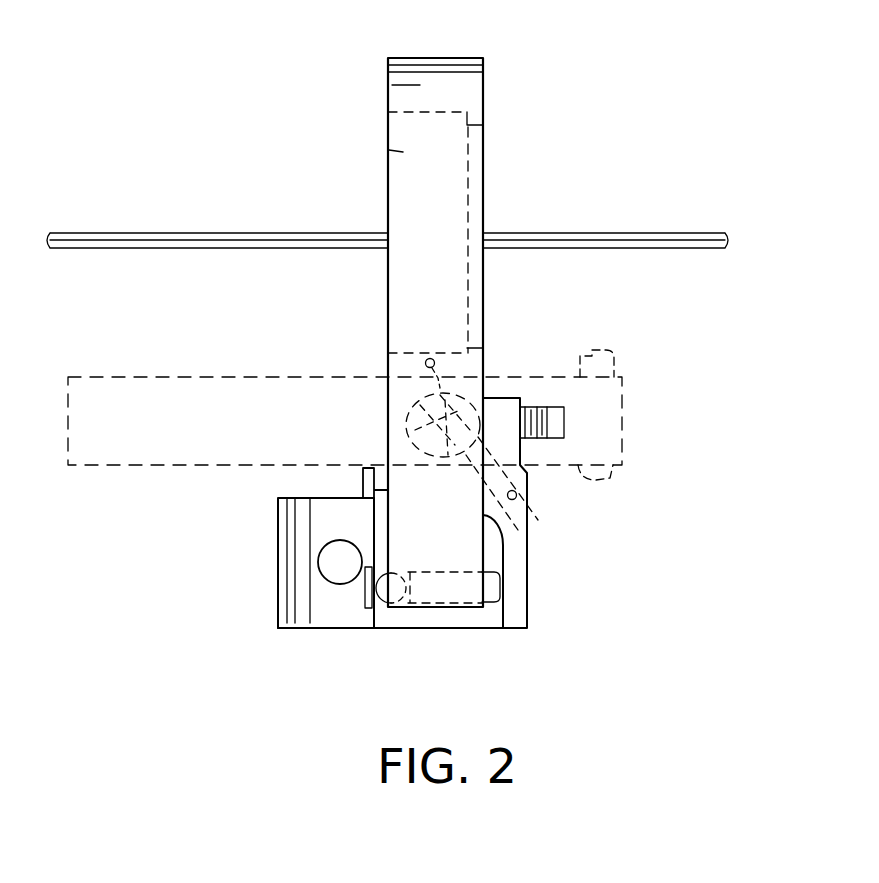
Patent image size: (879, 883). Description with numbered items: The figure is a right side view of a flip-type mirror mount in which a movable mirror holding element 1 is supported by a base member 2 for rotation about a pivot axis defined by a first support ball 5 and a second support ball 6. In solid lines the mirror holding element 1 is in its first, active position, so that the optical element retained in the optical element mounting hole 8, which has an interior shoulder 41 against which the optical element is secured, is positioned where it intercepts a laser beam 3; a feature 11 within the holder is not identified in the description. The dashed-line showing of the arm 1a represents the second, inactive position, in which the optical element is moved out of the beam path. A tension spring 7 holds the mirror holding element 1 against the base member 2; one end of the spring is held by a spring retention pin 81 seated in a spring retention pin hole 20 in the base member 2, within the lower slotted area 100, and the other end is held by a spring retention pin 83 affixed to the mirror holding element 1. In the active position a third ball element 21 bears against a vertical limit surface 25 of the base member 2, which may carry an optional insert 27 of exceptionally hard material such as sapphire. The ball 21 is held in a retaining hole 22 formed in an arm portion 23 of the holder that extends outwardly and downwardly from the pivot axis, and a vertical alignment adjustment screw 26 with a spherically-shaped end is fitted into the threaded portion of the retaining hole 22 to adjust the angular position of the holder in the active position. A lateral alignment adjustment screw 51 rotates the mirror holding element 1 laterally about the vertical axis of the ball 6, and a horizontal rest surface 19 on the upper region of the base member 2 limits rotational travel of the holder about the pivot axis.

The movable mirror holding element 1 is at (462, 332).
The arm 1a is at (345, 396).
The base member 2 is at (291, 563).
The laser beam 3 is at (387, 220).
The first support ball 5 is at (392, 425).
The second support ball 6 is at (392, 425).
The tension spring 7 is at (521, 408).
The optical element mounting hole 8 is at (460, 92).
The shaft interior 11 is at (357, 142).
The rest surface 19 is at (363, 480).
The spring retention pin hole 20 is at (538, 494).
The third ball element 21 is at (361, 641).
The retaining hole 22 is at (458, 631).
The arm portion 23 is at (530, 571).
The vertical limit surface 25 is at (371, 518).
The vertical alignment adjustment screw 26 is at (537, 599).
The insert 27 is at (318, 619).
The interior shoulder 41 is at (468, 232).
The lateral alignment adjustment screw 51 is at (574, 380).
The spring retention pin 81 is at (517, 494).
The spring retention pin 83 is at (381, 351).
The lower slotted area 100 is at (452, 513).